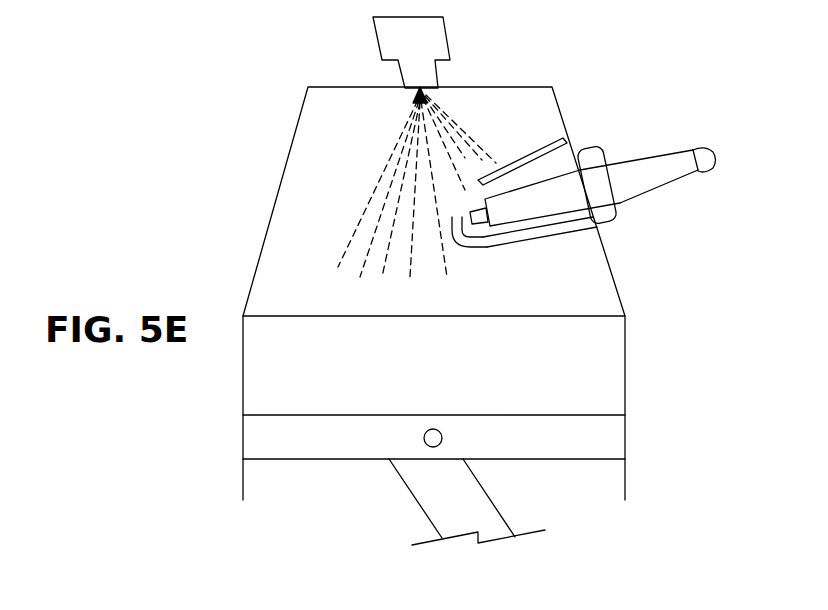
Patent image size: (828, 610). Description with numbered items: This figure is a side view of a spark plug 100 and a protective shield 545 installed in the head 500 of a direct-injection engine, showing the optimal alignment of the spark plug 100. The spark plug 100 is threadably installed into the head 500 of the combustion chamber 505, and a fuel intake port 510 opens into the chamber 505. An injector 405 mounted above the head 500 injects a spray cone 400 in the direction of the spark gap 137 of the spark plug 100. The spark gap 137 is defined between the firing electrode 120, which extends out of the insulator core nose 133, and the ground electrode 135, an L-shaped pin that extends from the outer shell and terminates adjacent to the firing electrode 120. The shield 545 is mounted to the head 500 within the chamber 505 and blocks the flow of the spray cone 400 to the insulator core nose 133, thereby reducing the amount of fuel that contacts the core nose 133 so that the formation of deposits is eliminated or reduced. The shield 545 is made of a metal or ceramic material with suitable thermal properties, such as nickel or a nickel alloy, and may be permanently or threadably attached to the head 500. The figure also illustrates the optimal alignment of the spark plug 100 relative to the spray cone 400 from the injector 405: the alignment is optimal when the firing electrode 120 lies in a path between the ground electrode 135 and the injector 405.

The spark plug 100 is at (650, 155).
The firing electrode 120 is at (485, 244).
The insulator core nose 133 is at (563, 207).
The ground electrode 135 is at (557, 231).
The spark gap 137 is at (467, 213).
The spray cone 400 is at (458, 123).
The injector 405 is at (373, 34).
The head 500 is at (280, 173).
The combustion chamber 505 is at (625, 360).
The fuel intake port 510 is at (415, 91).
The shield 545 is at (535, 143).